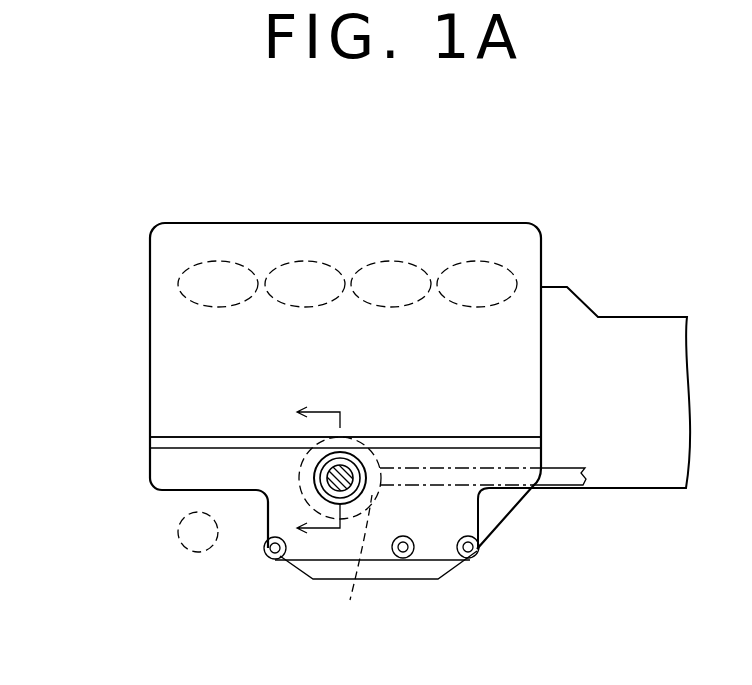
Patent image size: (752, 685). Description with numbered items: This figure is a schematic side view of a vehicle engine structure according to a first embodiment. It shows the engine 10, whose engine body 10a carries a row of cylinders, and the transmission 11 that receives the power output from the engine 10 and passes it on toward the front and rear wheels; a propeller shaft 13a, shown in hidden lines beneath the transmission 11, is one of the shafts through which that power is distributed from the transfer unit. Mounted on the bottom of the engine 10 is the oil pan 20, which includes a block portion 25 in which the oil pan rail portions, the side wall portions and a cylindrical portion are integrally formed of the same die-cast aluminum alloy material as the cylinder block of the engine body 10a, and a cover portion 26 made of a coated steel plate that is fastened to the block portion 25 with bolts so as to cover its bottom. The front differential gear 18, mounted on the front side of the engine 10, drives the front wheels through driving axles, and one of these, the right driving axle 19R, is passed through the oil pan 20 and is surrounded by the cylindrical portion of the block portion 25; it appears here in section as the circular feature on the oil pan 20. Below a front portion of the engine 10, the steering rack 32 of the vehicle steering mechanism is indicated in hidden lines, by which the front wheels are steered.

The engine 10 is at (427, 223).
The engine body 10a is at (150, 340).
The transmission 11 is at (592, 312).
The propeller shaft 13a is at (558, 468).
The front differential gear 18 is at (358, 565).
The right driving axle 19R is at (346, 470).
The oil pan 20 is at (146, 470).
The block portion 25 is at (458, 517).
The cover portion 26 is at (410, 580).
The steering rack 32 is at (183, 547).